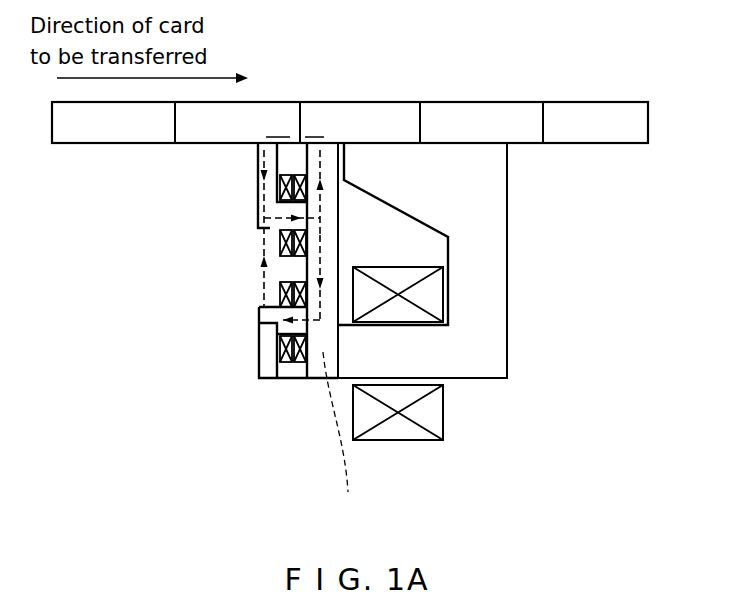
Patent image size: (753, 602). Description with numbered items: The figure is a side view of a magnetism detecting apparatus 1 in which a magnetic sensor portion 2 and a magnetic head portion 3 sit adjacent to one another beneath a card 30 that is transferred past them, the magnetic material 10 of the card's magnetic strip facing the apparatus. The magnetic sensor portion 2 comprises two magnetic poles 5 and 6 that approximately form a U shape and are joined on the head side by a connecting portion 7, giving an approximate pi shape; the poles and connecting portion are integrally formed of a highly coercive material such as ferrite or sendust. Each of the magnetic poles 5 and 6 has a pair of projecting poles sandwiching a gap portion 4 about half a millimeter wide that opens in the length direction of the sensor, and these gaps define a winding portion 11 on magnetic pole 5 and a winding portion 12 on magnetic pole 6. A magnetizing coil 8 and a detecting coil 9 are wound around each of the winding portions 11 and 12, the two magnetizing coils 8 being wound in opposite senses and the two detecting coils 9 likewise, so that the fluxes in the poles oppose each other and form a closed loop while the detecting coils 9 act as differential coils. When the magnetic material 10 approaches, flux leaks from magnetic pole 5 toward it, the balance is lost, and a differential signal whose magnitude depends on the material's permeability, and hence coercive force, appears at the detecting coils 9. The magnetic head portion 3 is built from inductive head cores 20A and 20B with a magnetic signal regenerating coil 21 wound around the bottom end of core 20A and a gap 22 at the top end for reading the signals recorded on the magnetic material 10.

The magnetism detecting apparatus 1 is at (378, 282).
The magnetic sensor portion 2 is at (246, 263).
The magnetic head portion 3 is at (522, 302).
The gap portion 4 is at (290, 155).
The magnetic pole 5 is at (228, 192).
The magnetic pole 6 is at (231, 362).
The connecting portion 7 is at (322, 255).
The magnetizing coil 8 is at (281, 185).
The detecting coil 9 is at (312, 176).
The magnetic material 10 is at (636, 128).
The winding portion 11 is at (270, 232).
The winding portion 12 is at (270, 322).
The inductive head core 20A is at (487, 258).
The inductive head core 20B is at (345, 437).
The magnetic signal regenerating coil 21 is at (423, 413).
The gap 22 is at (345, 137).
The card 30 is at (502, 99).